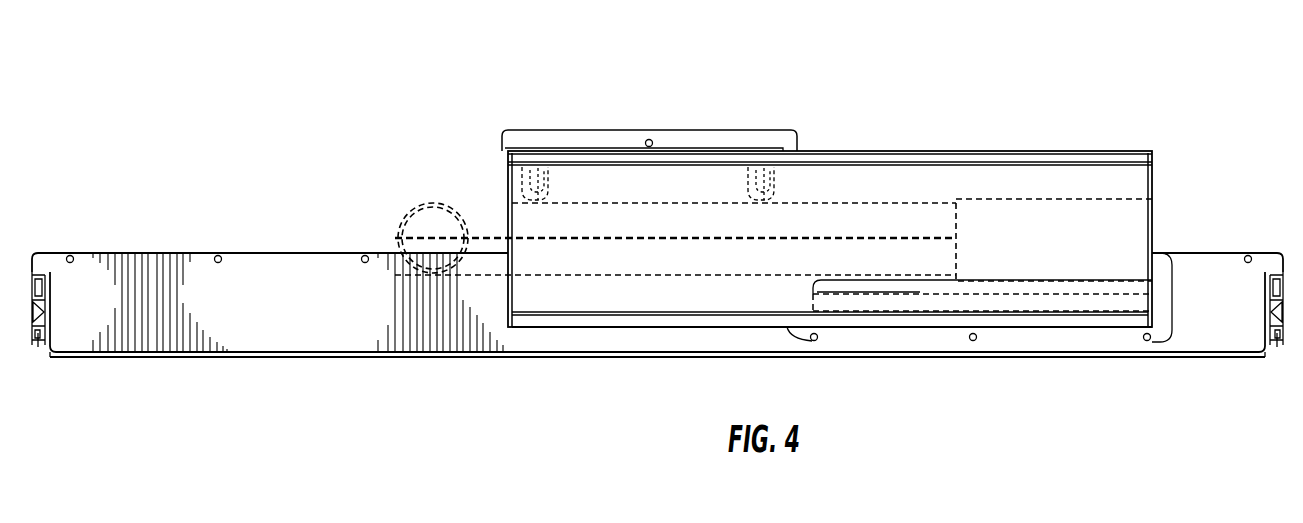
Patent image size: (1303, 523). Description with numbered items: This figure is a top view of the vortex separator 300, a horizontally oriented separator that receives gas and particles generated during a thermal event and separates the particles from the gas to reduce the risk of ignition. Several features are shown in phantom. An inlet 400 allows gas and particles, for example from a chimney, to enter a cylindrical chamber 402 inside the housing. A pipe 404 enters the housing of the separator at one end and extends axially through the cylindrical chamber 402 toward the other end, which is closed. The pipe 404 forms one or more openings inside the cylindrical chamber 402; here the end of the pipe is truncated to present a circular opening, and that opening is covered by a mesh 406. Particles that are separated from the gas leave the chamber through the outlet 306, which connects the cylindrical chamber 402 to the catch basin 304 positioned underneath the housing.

The vortex separator 300 is at (1042, 68).
The catch basin 304 is at (296, 330).
The outlet 306 is at (934, 302).
The inlet 400 is at (642, 188).
The cylindrical chamber 402 is at (563, 292).
The pipe 404 is at (883, 200).
The mesh 406 is at (1021, 198).